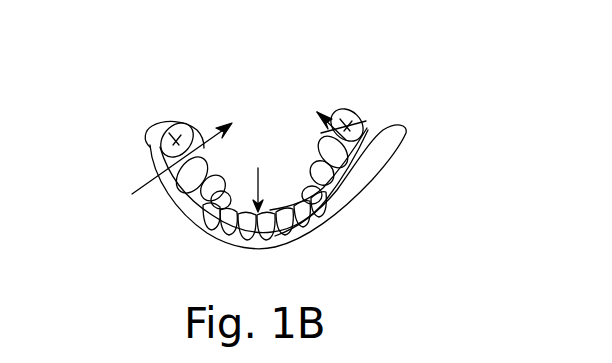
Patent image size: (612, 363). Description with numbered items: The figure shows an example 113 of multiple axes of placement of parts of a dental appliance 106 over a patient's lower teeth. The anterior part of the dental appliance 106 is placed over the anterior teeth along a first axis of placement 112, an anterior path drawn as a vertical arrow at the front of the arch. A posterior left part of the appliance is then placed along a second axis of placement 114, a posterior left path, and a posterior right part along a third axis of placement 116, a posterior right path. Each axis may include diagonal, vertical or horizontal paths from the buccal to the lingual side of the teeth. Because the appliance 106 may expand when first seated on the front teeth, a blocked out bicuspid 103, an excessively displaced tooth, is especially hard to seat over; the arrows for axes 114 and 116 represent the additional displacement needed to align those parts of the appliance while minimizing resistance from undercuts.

The blocked out bicuspid 103 is at (212, 186).
The dental appliance 106 is at (390, 152).
The first axis of placement 112 is at (258, 170).
The example of multiple axes of placement 113 is at (162, 66).
The second axis of placement 114 is at (141, 140).
The third axis of placement 116 is at (349, 129).